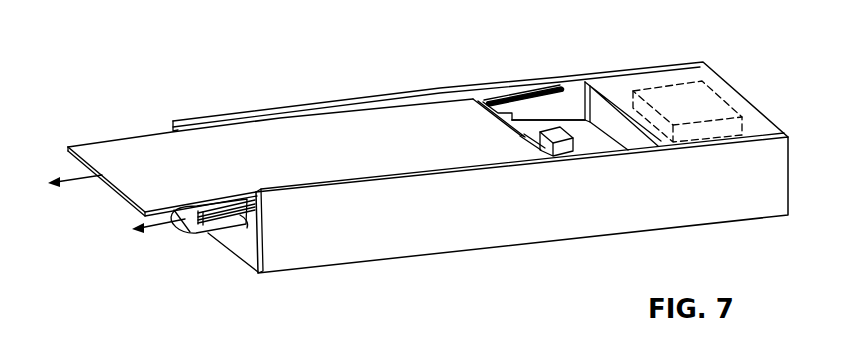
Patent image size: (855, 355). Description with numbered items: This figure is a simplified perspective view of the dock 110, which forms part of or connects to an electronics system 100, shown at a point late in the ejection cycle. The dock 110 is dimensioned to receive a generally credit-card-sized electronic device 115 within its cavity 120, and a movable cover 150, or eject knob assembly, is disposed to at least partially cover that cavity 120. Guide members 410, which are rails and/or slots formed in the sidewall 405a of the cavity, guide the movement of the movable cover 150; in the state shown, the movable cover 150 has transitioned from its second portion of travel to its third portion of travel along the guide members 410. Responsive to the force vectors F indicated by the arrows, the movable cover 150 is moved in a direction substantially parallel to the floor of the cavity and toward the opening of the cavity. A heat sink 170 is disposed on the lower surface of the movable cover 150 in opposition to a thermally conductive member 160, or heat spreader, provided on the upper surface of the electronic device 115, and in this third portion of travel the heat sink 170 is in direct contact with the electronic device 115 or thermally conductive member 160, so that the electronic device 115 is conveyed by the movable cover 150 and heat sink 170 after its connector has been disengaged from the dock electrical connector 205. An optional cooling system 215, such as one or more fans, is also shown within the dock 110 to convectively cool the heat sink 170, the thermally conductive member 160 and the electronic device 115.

The electronics system 100 is at (296, 309).
The dock 110 is at (747, 216).
The electronic device 115 is at (208, 231).
The cavity 120 is at (578, 111).
The movable cover 150 is at (168, 143).
The thermally conductive member 160 is at (247, 225).
The heat sink 170 is at (215, 200).
The dock electrical connector 205 is at (550, 127).
The cooling system 215 is at (723, 103).
The sidewall 405a is at (584, 79).
The guide members 410 is at (507, 88).